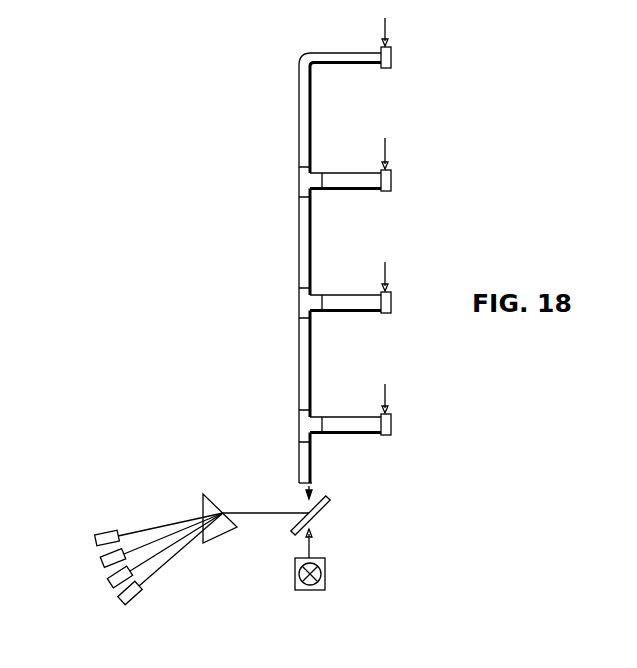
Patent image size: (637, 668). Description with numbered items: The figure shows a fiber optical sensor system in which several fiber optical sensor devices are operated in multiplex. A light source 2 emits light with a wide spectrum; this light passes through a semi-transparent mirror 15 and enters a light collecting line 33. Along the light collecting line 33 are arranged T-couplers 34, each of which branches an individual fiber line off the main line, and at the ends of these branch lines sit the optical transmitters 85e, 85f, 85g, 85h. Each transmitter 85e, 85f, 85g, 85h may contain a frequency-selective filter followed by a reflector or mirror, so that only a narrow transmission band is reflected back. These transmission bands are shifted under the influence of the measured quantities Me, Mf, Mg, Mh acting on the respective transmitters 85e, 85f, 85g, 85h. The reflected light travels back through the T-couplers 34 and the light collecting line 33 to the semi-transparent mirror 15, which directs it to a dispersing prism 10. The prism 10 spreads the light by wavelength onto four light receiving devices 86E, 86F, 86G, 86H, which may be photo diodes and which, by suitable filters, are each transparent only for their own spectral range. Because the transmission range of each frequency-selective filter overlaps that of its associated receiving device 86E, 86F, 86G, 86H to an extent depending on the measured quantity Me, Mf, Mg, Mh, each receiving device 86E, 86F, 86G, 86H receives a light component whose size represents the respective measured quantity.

The light source 2 is at (326, 565).
The dispersing prism 10 is at (203, 496).
The semi-transparent mirror 15 is at (327, 505).
The light collecting line 33 is at (307, 469).
The T-coupler 34 is at (305, 183).
The optical transmitter 85e is at (393, 424).
The optical transmitter 85f is at (393, 303).
The optical transmitter 85g is at (393, 182).
The optical transmitter 85h is at (393, 58).
The measured quantity Me is at (397, 398).
The measured quantity Mf is at (395, 276).
The measured quantity Mg is at (397, 153).
The measured quantity Mh is at (397, 31).
The light receiving device 86E is at (96, 536).
The light receiving device 86F is at (103, 559).
The light receiving device 86G is at (110, 580).
The light receiving device 86H is at (122, 600).